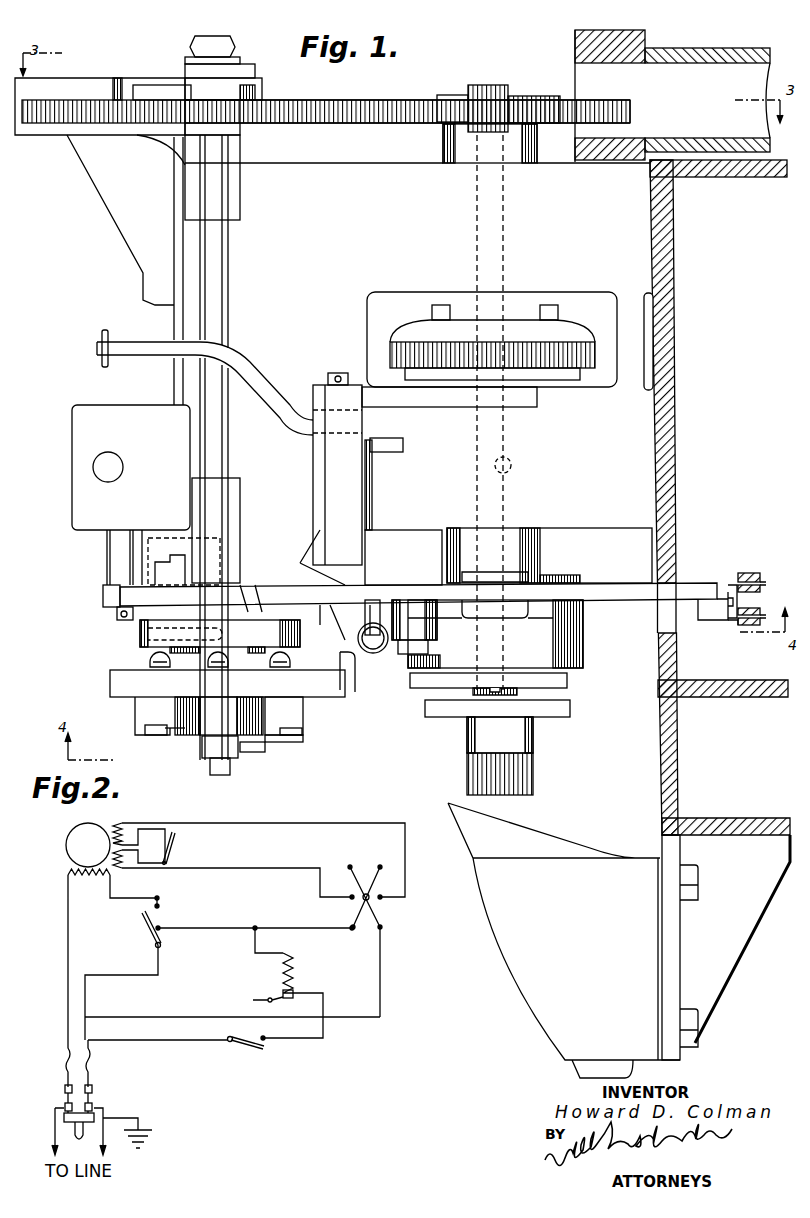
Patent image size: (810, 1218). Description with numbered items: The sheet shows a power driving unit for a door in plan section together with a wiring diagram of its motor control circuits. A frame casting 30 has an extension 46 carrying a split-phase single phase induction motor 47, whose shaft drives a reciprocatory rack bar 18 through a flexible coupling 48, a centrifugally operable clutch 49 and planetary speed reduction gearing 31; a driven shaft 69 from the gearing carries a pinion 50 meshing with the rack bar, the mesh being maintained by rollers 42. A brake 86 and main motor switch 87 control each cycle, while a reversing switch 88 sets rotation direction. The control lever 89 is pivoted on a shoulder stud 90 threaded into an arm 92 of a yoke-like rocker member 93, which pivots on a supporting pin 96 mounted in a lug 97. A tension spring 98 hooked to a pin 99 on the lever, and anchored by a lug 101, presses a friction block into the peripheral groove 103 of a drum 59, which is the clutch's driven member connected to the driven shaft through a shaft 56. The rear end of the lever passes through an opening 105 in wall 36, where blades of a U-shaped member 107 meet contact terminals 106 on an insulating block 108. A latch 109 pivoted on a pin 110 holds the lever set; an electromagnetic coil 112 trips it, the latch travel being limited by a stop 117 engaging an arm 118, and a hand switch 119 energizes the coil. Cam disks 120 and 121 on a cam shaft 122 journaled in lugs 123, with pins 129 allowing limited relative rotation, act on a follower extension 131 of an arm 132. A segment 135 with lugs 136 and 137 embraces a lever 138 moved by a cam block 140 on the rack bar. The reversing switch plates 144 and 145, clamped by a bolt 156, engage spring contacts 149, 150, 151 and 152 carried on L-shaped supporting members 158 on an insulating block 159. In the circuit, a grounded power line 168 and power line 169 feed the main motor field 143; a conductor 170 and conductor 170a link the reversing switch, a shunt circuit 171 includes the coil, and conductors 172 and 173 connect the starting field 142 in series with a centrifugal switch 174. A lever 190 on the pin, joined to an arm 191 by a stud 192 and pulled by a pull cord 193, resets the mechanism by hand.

In FIG. 1, the reciprocatory rack bar 18 is at (410, 100).
In FIG. 1, the frame casting 30 is at (375, 163).
In FIG. 1, the speed reduction gearing 31 is at (548, 330).
In FIG. 1, the wall 36 is at (670, 670).
In FIG. 1, the rollers 42 is at (438, 95).
In FIG. 1, the extension 46 is at (672, 962).
In FIG. 1, the single phase induction motor 47 is at (605, 860).
In FIG. 2, the single phase induction motor 47 is at (70, 845).
In FIG. 1, the flexible coupling 48 is at (432, 710).
In FIG. 1, the centrifugally operable clutch 49 is at (580, 680).
In FIG. 1, the pinion 50 is at (512, 96).
In FIG. 1, the shaft 56 is at (509, 470).
In FIG. 1, the drum 59 is at (560, 634).
In FIG. 1, the driven shaft 69 is at (509, 230).
In FIG. 1, the brake 86 is at (525, 577).
In FIG. 1, the main motor switch 87 is at (762, 572).
In FIG. 2, the main motor switch 87 is at (146, 938).
In FIG. 1, the reversing switch 88 is at (245, 762).
In FIG. 2, the reversing switch 88 is at (386, 902).
In FIG. 1, the lever 89 is at (628, 590).
In FIG. 1, the shoulder stud 90 is at (420, 641).
In FIG. 1, the arm 92 is at (385, 545).
In FIG. 1, the rocker member 93 is at (330, 487).
In FIG. 1, the supporting pin 96 is at (352, 373).
In FIG. 1, the lug 97 is at (372, 496).
In FIG. 1, the tension spring 98 is at (372, 654).
In FIG. 1, the pin 99 is at (368, 620).
In FIG. 1, the lug 101 is at (355, 676).
In FIG. 1, the peripheral groove 103 is at (560, 615).
In FIG. 1, the opening 105 is at (666, 625).
In FIG. 1, the contact terminals 106 is at (758, 611).
In FIG. 1, the U-shaped member 107 is at (735, 622).
In FIG. 2, the U-shaped member 107 is at (158, 939).
In FIG. 2, the insulating block 108 is at (157, 913).
In FIG. 1, the latch 109 is at (103, 599).
In FIG. 2, the latch 109 is at (260, 999).
In FIG. 1, the pin 110 is at (116, 616).
In FIG. 1, the electromagnetic coil 112 is at (140, 632).
In FIG. 2, the electromagnetic coil 112 is at (295, 969).
In FIG. 1, the stop 117 is at (140, 557).
In FIG. 1, the arm 118 is at (178, 560).
In FIG. 2, the hand switch 119 is at (245, 1052).
In FIG. 1, the disk 120 is at (140, 644).
In FIG. 1, the disk 121 is at (280, 578).
In FIG. 1, the cam shaft 122 is at (215, 298).
In FIG. 1, the lugs 123 is at (220, 211).
In FIG. 1, the pins 129 is at (165, 672).
In FIG. 1, the extension 131 is at (313, 615).
In FIG. 1, the arm 132 is at (315, 585).
In FIG. 1, the segment 135 is at (235, 115).
In FIG. 1, the lug 136 is at (198, 72).
In FIG. 1, the lug 137 is at (247, 92).
In FIG. 1, the lever 138 is at (152, 85).
In FIG. 1, the cam block 140 is at (118, 78).
In FIG. 2, the starting field 142 is at (122, 832).
In FIG. 2, the main motor field 143 is at (90, 878).
In FIG. 1, the connecting plate 144 is at (262, 742).
In FIG. 1, the connecting plate 145 is at (170, 740).
In FIG. 2, the spring contact 149 is at (383, 929).
In FIG. 1, the spring contact 150 is at (300, 735).
In FIG. 2, the spring contact 150 is at (385, 901).
In FIG. 2, the spring contact 151 is at (356, 942).
In FIG. 1, the spring contact 152 is at (148, 735).
In FIG. 2, the spring contact 152 is at (350, 899).
In FIG. 1, the bolt 156 is at (203, 756).
In FIG. 1, the supporting members 158 is at (222, 712).
In FIG. 1, the insulating block 159 is at (118, 688).
In FIG. 2, the grounded power line 168 is at (115, 1142).
In FIG. 2, the power line 169 is at (55, 1122).
In FIG. 2, the conductor 170 is at (232, 1005).
In FIG. 2, the conductor 170a is at (229, 927).
In FIG. 2, the shunt circuit 171 is at (325, 1034).
In FIG. 2, the conductor 172 is at (287, 823).
In FIG. 2, the conductor 173 is at (238, 868).
In FIG. 2, the centrifugal switch 174 is at (174, 848).
In FIG. 1, the lever 190 is at (285, 403).
In FIG. 1, the arm 191 is at (405, 403).
In FIG. 1, the stud 192 is at (385, 452).
In FIG. 1, the pull cord 193 is at (108, 333).